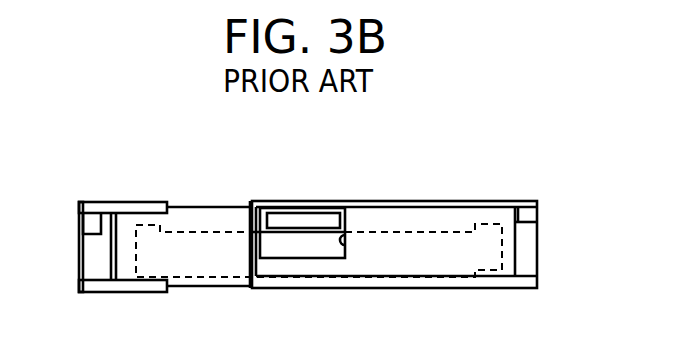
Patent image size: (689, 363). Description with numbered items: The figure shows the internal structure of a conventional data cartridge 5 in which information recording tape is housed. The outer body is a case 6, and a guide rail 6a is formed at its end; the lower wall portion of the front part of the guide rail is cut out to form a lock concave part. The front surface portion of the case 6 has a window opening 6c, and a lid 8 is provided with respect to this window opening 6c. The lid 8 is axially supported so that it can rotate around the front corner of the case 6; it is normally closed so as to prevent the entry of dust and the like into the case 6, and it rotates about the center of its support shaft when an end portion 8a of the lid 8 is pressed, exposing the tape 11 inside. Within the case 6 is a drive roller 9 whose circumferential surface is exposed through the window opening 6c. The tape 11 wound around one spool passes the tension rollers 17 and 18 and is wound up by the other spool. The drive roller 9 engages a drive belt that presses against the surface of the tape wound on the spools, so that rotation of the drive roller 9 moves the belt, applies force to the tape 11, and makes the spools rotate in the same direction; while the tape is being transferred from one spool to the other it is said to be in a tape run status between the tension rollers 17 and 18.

The data cartridge 5 is at (262, 154).
The case 6 is at (460, 200).
The guide rail 6a is at (517, 253).
The window opening 6c is at (345, 240).
The lid 8 is at (207, 215).
The end portion 8a is at (90, 260).
The drive roller 9 is at (325, 220).
The tape 11 is at (213, 262).
The tension roller 17 is at (148, 200).
The tension roller 18 is at (517, 205).